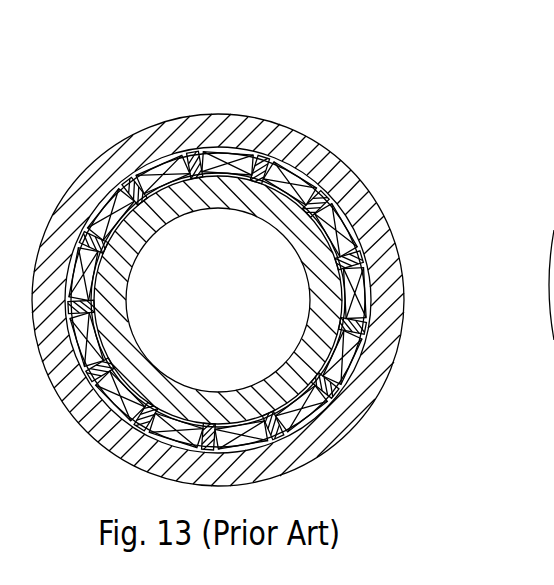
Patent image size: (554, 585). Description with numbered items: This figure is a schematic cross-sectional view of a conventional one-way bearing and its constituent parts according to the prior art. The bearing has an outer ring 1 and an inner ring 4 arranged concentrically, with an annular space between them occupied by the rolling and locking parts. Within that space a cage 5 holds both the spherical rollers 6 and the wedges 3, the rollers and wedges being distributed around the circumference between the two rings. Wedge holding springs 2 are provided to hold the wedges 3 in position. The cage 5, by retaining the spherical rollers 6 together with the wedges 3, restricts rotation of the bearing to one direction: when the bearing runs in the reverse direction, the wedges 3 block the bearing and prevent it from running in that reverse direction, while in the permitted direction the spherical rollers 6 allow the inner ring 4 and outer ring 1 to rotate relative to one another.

The outer ring 1 is at (305, 158).
The wedge holding spring 2 is at (328, 205).
The wedge 3 is at (343, 240).
The inner ring 4 is at (358, 290).
The cage 5 is at (372, 326).
The spherical roller 6 is at (395, 353).